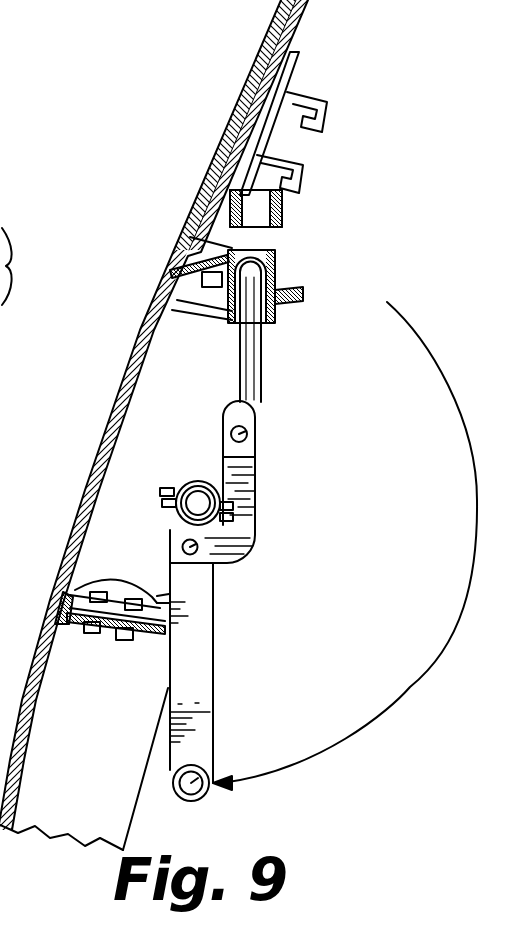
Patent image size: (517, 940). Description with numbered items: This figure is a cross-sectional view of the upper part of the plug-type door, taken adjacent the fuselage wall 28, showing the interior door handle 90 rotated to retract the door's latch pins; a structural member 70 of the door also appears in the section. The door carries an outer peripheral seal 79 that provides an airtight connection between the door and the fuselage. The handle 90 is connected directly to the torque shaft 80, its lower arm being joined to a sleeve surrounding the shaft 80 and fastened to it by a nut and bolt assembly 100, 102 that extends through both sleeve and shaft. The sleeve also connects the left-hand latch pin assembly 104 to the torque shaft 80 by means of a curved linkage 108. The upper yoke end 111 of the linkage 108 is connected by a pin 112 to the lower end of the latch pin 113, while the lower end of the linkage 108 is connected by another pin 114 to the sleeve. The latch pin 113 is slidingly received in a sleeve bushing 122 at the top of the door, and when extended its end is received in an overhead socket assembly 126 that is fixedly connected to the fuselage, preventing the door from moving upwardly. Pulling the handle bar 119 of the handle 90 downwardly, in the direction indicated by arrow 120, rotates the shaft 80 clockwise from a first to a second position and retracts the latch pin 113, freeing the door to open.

The fuselage wall 28 is at (278, 8).
The outer peripheral seal 79 is at (200, 240).
The handle bar 119 is at (67, 852).
The interior door handle 90 is at (0, 352).
The overhead socket assembly 126 is at (283, 208).
The sleeve bushing 122 is at (280, 240).
The latch pin 113 is at (264, 350).
The latch pin assembly 104 is at (272, 376).
The pin 112 is at (249, 434).
The upper yoke end 111 is at (258, 450).
The nut and bolt assembly 102 is at (165, 478).
The linkage 108 is at (260, 480).
The torque shaft 80 is at (158, 533).
The nut and bolt assembly 100 is at (256, 524).
The pin 114 is at (190, 550).
The mounting plate 70 is at (60, 588).
The arrow 120 is at (380, 719).